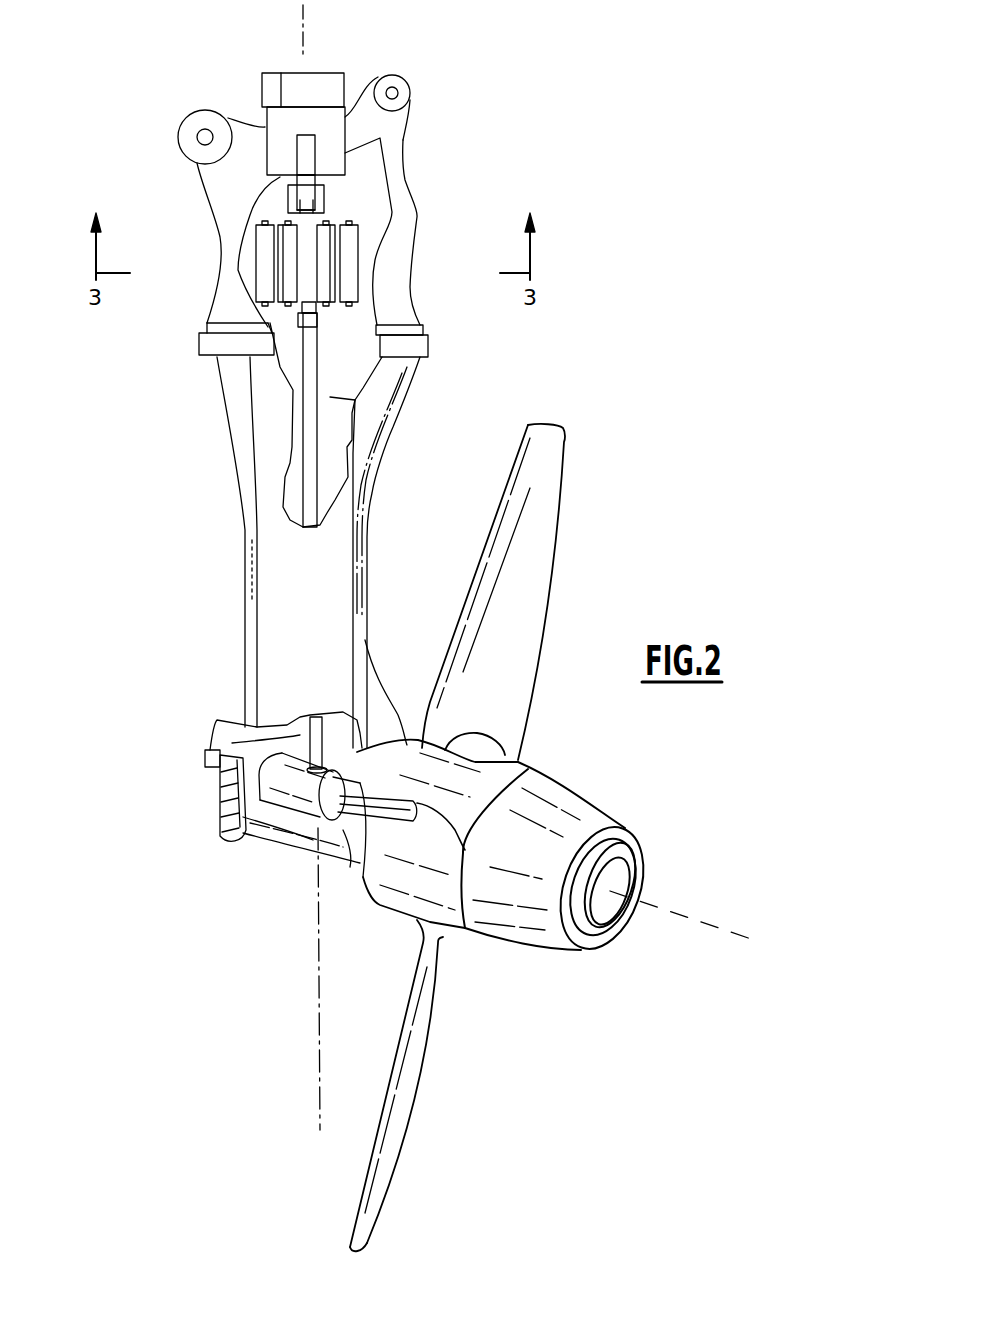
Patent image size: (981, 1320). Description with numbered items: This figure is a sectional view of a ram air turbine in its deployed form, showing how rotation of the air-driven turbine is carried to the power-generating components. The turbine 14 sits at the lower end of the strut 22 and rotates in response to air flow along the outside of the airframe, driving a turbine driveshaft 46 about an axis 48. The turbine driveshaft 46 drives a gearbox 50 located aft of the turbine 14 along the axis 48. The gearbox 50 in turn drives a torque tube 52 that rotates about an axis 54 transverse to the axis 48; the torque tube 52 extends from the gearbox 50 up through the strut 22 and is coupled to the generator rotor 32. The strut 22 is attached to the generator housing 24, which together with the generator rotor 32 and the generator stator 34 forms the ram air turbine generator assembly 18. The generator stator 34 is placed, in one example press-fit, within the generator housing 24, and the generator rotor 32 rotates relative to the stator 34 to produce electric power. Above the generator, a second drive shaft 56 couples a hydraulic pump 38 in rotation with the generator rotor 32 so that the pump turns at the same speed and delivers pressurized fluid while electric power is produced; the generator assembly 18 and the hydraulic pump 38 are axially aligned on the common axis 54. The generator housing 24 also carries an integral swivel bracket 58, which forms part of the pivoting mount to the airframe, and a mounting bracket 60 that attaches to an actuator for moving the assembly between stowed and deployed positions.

The turbine 14 is at (376, 915).
The ram air turbine generator assembly 18 is at (268, 332).
The strut 22 is at (263, 597).
The generator housing 24 is at (402, 231).
The generator rotor 32 is at (288, 263).
The generator stator 34 is at (265, 247).
The hydraulic pump 38 is at (332, 128).
The turbine driveshaft 46 is at (473, 843).
The axis 48 is at (708, 918).
The gearbox 50 is at (285, 808).
The torque tube 52 is at (310, 393).
The axis 54 is at (320, 1055).
The second drive shaft 56 is at (307, 182).
The swivel bracket 58 is at (222, 180).
The mounting bracket 60 is at (390, 110).